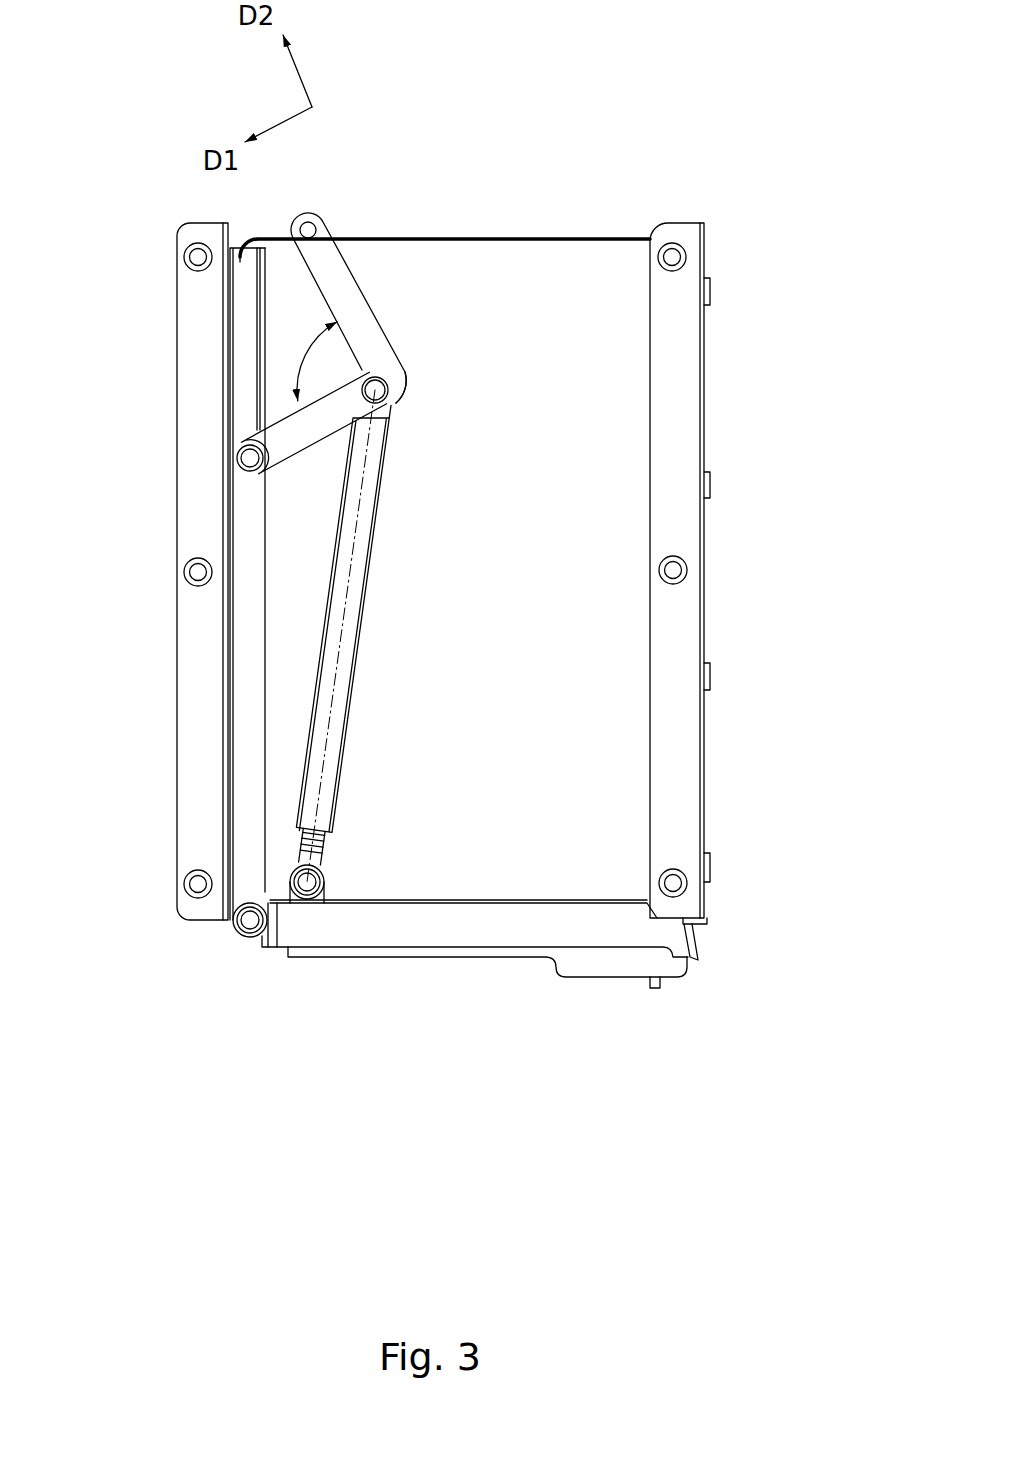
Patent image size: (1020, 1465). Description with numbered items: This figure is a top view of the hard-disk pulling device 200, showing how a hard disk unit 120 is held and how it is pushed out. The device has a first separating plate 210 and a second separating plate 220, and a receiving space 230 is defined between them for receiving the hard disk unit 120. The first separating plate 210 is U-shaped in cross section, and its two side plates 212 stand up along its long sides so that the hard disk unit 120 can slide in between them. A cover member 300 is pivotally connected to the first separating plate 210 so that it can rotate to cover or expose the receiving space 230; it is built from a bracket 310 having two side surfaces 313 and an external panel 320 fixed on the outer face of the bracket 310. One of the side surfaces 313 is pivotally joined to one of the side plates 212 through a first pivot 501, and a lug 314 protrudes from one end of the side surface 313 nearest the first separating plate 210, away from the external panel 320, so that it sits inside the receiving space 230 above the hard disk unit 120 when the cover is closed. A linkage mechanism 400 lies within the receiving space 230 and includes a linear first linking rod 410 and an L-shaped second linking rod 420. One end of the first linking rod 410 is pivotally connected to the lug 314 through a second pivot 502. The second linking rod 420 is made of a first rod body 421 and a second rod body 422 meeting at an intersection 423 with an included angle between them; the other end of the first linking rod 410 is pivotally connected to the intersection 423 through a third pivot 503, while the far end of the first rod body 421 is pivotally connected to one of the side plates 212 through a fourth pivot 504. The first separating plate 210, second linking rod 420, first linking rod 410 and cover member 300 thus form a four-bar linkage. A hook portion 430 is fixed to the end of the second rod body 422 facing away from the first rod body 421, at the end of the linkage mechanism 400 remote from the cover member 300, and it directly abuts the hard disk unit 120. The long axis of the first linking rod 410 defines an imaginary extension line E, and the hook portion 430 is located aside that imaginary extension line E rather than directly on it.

The hard-disk pulling device 200 is at (90, 121).
The hard disk unit 120 is at (637, 750).
The second separating plate 220 is at (175, 224).
The receiving space 230 is at (633, 235).
The first separating plate 210 is at (229, 328).
The side plates 212 is at (240, 300).
The cover member 300 is at (493, 1072).
The bracket 310 is at (522, 934).
The side surfaces 313 is at (437, 930).
The lug 314 is at (325, 892).
The external panel 320 is at (577, 972).
The linkage mechanism 400 is at (845, 262).
The first linking rod 410 is at (385, 505).
The second linking rod 420 is at (775, 295).
The first rod body 421 is at (353, 416).
The second rod body 422 is at (348, 300).
The intersection 423 is at (397, 375).
The hook portion 430 is at (308, 230).
The first pivot 501 is at (250, 923).
The second pivot 502 is at (307, 884).
The third pivot 503 is at (374, 391).
The fourth pivot 504 is at (250, 458).
The imaginary extension line E is at (372, 510).